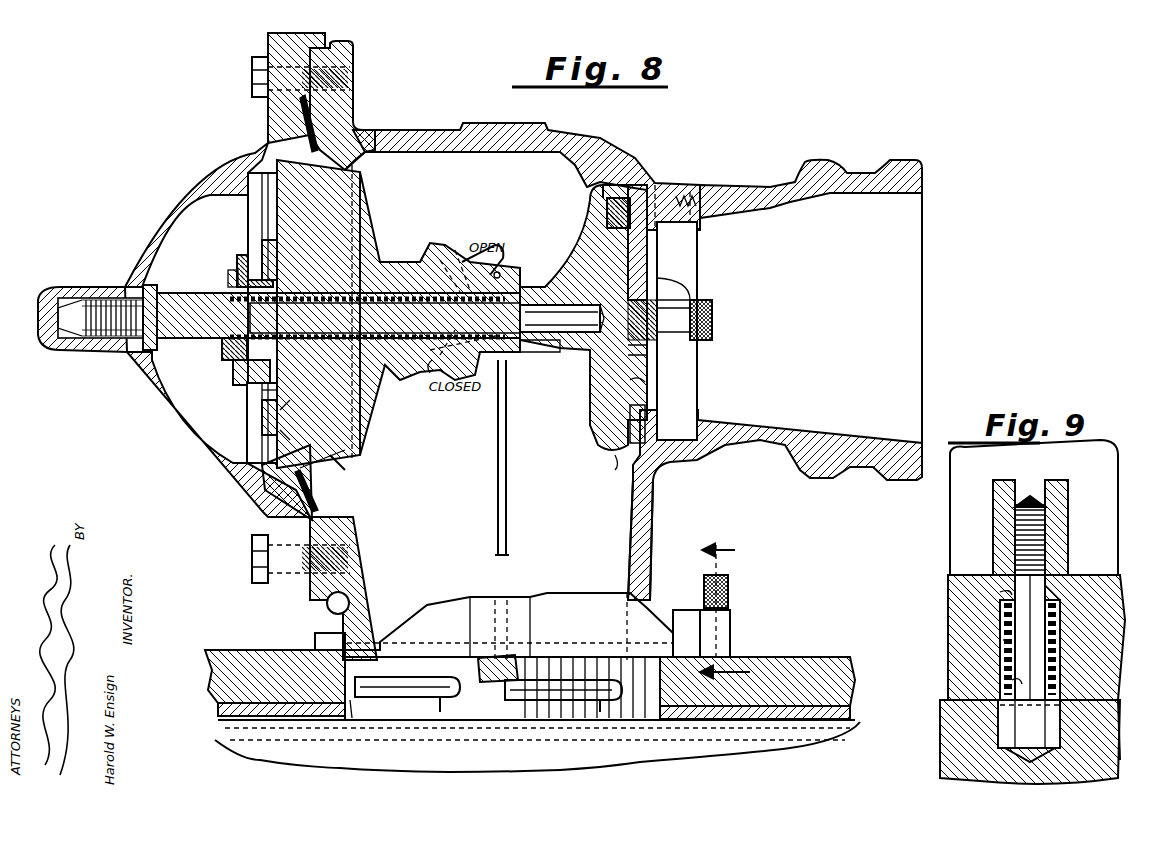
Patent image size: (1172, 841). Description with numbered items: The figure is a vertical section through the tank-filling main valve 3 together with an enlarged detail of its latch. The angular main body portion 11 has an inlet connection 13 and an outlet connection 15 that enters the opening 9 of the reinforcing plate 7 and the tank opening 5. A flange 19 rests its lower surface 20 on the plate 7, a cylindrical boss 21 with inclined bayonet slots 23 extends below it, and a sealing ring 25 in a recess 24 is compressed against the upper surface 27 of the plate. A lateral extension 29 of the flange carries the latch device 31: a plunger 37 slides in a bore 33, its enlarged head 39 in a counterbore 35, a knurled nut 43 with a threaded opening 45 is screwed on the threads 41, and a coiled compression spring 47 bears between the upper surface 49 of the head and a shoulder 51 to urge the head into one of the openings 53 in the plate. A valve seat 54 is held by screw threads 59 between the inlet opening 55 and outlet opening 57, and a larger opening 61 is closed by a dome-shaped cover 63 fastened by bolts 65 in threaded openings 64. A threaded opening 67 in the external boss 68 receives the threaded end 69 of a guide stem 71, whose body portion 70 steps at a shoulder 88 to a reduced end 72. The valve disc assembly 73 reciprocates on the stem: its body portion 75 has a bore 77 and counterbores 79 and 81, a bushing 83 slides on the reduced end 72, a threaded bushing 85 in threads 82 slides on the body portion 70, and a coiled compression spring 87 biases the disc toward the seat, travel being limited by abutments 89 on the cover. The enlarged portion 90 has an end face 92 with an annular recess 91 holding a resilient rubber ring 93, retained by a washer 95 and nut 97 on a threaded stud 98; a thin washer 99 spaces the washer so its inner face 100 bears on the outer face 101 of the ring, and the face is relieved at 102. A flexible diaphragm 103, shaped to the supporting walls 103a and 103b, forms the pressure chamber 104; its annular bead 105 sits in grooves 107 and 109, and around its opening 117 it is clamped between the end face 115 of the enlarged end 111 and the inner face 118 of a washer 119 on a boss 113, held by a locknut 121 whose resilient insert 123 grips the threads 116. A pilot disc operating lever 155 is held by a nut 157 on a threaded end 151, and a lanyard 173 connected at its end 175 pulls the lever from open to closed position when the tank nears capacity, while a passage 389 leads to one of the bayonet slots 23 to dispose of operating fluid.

In FIG. 8, the tank-filling main valve 3 is at (468, 100).
In FIG. 8, the opening 5 is at (352, 712).
In FIG. 8, the plate 7 is at (232, 660).
In FIG. 9, the plate 7 is at (948, 748).
In FIG. 8, the opening 9 is at (648, 712).
In FIG. 8, the main body portion 11 is at (612, 140).
In FIG. 9, the main body portion 11 is at (948, 550).
In FIG. 8, the inlet connection 13 is at (922, 180).
In FIG. 8, the outlet connection 15 is at (408, 712).
In FIG. 8, the flange 19 is at (672, 630).
In FIG. 8, the lower surface 20 is at (668, 668).
In FIG. 9, the lower surface 20 is at (1120, 722).
In FIG. 8, the cylindrical boss 21 is at (536, 712).
In FIG. 8, the bayonet slots 23 is at (445, 714).
In FIG. 8, the recess 24 is at (318, 640).
In FIG. 8, the sealing ring 25 is at (338, 632).
In FIG. 8, the upper surface 27 is at (247, 650).
In FIG. 9, the upper surface 27 is at (948, 700).
In FIG. 8, the lateral extension 29 is at (732, 640).
In FIG. 9, the lateral extension 29 is at (960, 608).
In FIG. 8, the latch device 31 is at (730, 592).
In FIG. 9, the latch device 31 is at (990, 530).
In FIG. 9, the bore 33 is at (1000, 593).
In FIG. 9, the counterbore 35 is at (1002, 650).
In FIG. 9, the plunger 37 is at (1045, 644).
In FIG. 9, the enlarged head 39 is at (1048, 722).
In FIG. 9, the threads 41 is at (1047, 528).
In FIG. 8, the knurled nut 43 is at (730, 596).
In FIG. 9, the knurled nut 43 is at (1068, 498).
In FIG. 9, the threaded opening 45 is at (1028, 500).
In FIG. 9, the coiled compression spring 47 is at (1058, 612).
In FIG. 9, the upper surface 49 is at (1010, 678).
In FIG. 9, the shoulder 51 is at (1056, 600).
In FIG. 9, the openings 53 is at (1003, 718).
In FIG. 8, the valve seat 54 is at (672, 190).
In FIG. 8, the inlet opening 55 is at (915, 298).
In FIG. 8, the outlet opening 57 is at (625, 575).
In FIG. 8, the screw threads 59 is at (690, 200).
In FIG. 8, the opening 61 is at (360, 172).
In FIG. 8, the dome-shaped cover 63 is at (178, 430).
In FIG. 8, the threaded openings 64 is at (356, 56).
In FIG. 8, the bolts 65 is at (260, 80).
In FIG. 8, the threaded opening 67 is at (100, 285).
In FIG. 8, the external boss 68 is at (48, 285).
In FIG. 8, the threaded end 69 is at (100, 340).
In FIG. 8, the body portion 70 is at (185, 330).
In FIG. 8, the guide stem 71 is at (192, 290).
In FIG. 8, the reduced end 72 is at (372, 230).
In FIG. 8, the valve disc assembly 73 is at (586, 235).
In FIG. 8, the body portion 75 is at (555, 288).
In FIG. 8, the bore 77 is at (528, 355).
In FIG. 8, the counterbore 79 is at (395, 382).
In FIG. 8, the counterbore 81 is at (236, 290).
In FIG. 8, the threads 82 is at (235, 360).
In FIG. 8, the bushing 83 is at (522, 286).
In FIG. 8, the threaded bushing 85 is at (338, 315).
In FIG. 8, the coiled compression spring 87 is at (305, 303).
In FIG. 8, the shoulder 88 is at (377, 318).
In FIG. 8, the abutments 89 is at (252, 190).
In FIG. 8, the enlarged portion 90 is at (612, 195).
In FIG. 8, the annular recess 91 is at (610, 205).
In FIG. 8, the end face 92 is at (628, 246).
In FIG. 8, the resilient rubber ring 93 is at (616, 458).
In FIG. 8, the washer 95 is at (650, 275).
In FIG. 8, the nut 97 is at (697, 275).
In FIG. 8, the threaded stud 98 is at (712, 322).
In FIG. 8, the thin washer 99 is at (628, 350).
In FIG. 8, the inner face 100 is at (647, 386).
In FIG. 8, the outer face 101 is at (647, 405).
In FIG. 8, the relieved portion 102 is at (650, 185).
In FIG. 8, the flexible diaphragm 103 is at (330, 425).
In FIG. 8, the diaphragm-supporting wall 103a is at (350, 462).
In FIG. 8, the diaphragm-supporting wall 103b is at (300, 480).
In FIG. 8, the diaphragm pressure chamber 104 is at (198, 404).
In FIG. 8, the annular bead 105 is at (300, 112).
In FIG. 8, the groove 107 is at (290, 490).
In FIG. 8, the groove 109 is at (335, 478).
In FIG. 8, the enlarged end 111 is at (362, 210).
In FIG. 8, the boss 113 is at (258, 255).
In FIG. 8, the end face 115 is at (290, 262).
In FIG. 8, the threads 116 is at (260, 423).
In FIG. 8, the opening 117 is at (270, 372).
In FIG. 8, the inner face 118 is at (272, 392).
In FIG. 8, the washer 119 is at (310, 438).
In FIG. 8, the locknut 121 is at (247, 404).
In FIG. 8, the annular resilient insert 123 is at (248, 268).
In FIG. 8, the threaded end 151 is at (406, 257).
In FIG. 8, the pilot disc operating lever 155 is at (456, 262).
In FIG. 8, the nut 157 is at (451, 362).
In FIG. 8, the lanyard 173 is at (509, 545).
In FIG. 8, the end 175 is at (508, 250).
In FIG. 8, the passage 389 is at (478, 665).